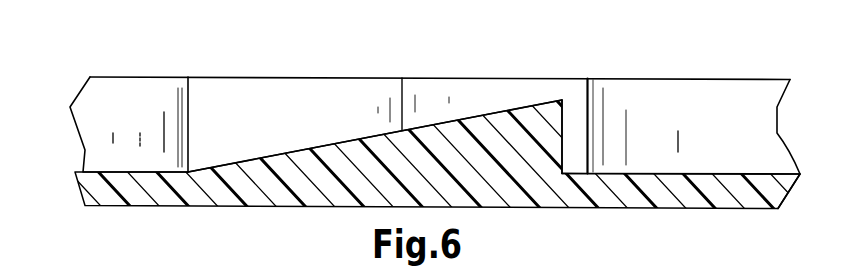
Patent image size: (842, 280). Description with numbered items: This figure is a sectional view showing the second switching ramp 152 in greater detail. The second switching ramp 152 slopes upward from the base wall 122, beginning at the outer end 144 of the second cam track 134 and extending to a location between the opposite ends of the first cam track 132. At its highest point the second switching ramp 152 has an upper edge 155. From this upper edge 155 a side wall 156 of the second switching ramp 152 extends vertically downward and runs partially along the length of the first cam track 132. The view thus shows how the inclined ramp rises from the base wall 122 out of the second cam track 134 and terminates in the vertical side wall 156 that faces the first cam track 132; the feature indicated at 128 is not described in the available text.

The base wall 122 is at (100, 188).
The top surface of the board 128 is at (146, 57).
The first cam track 132 is at (718, 132).
The second cam track 134 is at (147, 124).
The outer end of the second cam track 144 is at (188, 171).
The second switching ramp 152 is at (343, 137).
The upper edge 155 is at (562, 100).
The side wall 156 is at (562, 148).